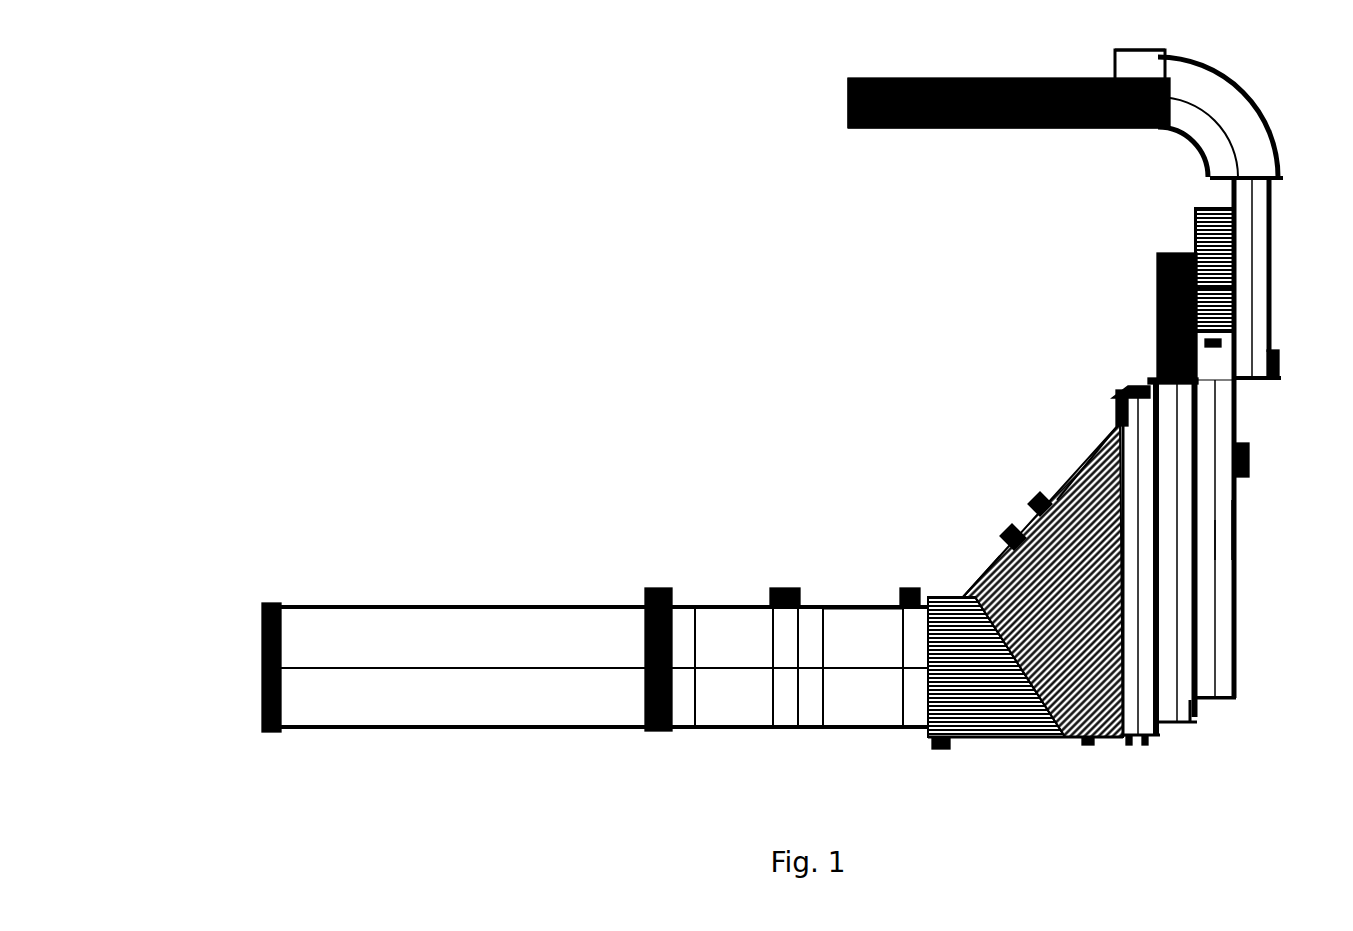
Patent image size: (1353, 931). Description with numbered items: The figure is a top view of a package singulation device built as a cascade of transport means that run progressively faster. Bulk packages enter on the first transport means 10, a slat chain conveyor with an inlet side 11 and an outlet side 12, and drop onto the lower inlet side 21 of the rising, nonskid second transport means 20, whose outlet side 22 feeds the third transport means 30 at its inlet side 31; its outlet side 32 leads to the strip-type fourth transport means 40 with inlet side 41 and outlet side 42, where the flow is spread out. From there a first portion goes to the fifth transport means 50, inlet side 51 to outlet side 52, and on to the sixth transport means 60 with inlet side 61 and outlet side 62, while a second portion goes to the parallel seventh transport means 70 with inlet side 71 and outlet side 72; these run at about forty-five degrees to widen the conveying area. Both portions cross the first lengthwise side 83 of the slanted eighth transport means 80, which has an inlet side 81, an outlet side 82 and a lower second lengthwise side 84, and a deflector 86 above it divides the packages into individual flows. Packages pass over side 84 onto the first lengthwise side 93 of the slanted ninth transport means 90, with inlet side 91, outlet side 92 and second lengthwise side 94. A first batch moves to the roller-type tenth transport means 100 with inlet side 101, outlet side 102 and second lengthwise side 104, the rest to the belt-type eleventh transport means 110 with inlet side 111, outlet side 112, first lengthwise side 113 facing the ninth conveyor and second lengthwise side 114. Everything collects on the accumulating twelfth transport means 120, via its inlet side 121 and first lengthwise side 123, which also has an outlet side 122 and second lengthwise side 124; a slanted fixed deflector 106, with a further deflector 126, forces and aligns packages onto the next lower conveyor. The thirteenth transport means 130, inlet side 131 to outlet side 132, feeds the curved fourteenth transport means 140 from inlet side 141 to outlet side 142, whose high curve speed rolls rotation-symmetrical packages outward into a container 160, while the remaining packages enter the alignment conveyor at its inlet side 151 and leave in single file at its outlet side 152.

The first transport means 10 is at (450, 630).
The inlet side of the first transport means 11 is at (265, 655).
The outlet side of the first transport means 12 is at (642, 605).
The second transport means 20 is at (733, 637).
The inlet side of the second transport means 21 is at (682, 637).
The outlet side of the second transport means 22 is at (793, 653).
The third transport means 30 is at (865, 690).
The inlet side of the third transport means 31 is at (805, 633).
The outlet side of the third transport means 32 is at (920, 633).
The fourth transport means 40 is at (992, 742).
The inlet side of the fourth transport means 41 is at (950, 742).
The outlet side of the fourth transport means 42 is at (1023, 740).
The fifth transport means 50 is at (990, 575).
The inlet side of the fifth transport means 51 is at (960, 580).
The outlet side of the fifth transport means 52 is at (1005, 525).
The sixth transport means 60 is at (1070, 488).
The inlet side of the sixth transport means 61 is at (1035, 505).
The outlet side of the sixth transport means 62 is at (1105, 452).
The seventh transport means 70 is at (1058, 742).
The inlet side of the seventh transport means 71 is at (1088, 742).
The outlet side of the seventh transport means 72 is at (1140, 740).
The eighth transport means 80 is at (1160, 737).
The inlet side of the eighth transport means 81 is at (1134, 742).
The outlet side of the eighth transport means 82 is at (1133, 387).
The first lengthwise side of the eighth transport means 83 is at (1183, 728).
The second lengthwise side of the eighth transport means 84 is at (1193, 728).
The deflector 86 is at (1115, 392).
The ninth transport means 90 is at (1200, 635).
The inlet side of the ninth transport means 91 is at (1184, 733).
The outlet side of the ninth transport means 92 is at (1155, 380).
The first lengthwise side of the ninth transport means 93 is at (1220, 570).
The second lengthwise side of the ninth transport means 94 is at (1115, 420).
The tenth transport means 100 is at (1157, 290).
The inlet side of the tenth transport means 101 is at (1157, 357).
The outlet side of the tenth transport means 102 is at (1157, 255).
The second lengthwise side of the tenth transport means 104 is at (1157, 300).
The deflector 106 is at (1157, 335).
The eleventh transport means 110 is at (1218, 575).
The inlet side of the eleventh transport means 111 is at (1220, 708).
The outlet side of the eleventh transport means 112 is at (1213, 342).
The first lengthwise side of the eleventh transport means 113 is at (1198, 547).
The second lengthwise side of the eleventh transport means 114 is at (1240, 540).
The twelfth transport means 120 is at (1195, 245).
The inlet side of the twelfth transport means 121 is at (1237, 333).
The outlet side of the twelfth transport means 122 is at (1237, 222).
The first lengthwise side of the twelfth transport means 123 is at (1237, 288).
The second lengthwise side of the twelfth transport means 124 is at (1190, 213).
The deflector 126 is at (1200, 230).
The thirteenth transport means 130 is at (1245, 265).
The inlet side of the thirteenth transport means 131 is at (1255, 380).
The outlet side of the thirteenth transport means 132 is at (1270, 203).
The fourteenth transport means 140 is at (1220, 92).
The inlet side of the fourteenth transport means 141 is at (1245, 150).
The outlet side of the fourteenth transport means 142 is at (1170, 72).
The inlet side of the fifteenth transport means 151 is at (1097, 78).
The outlet side of the fifteenth transport means 152 is at (883, 78).
The container 160 is at (1132, 45).